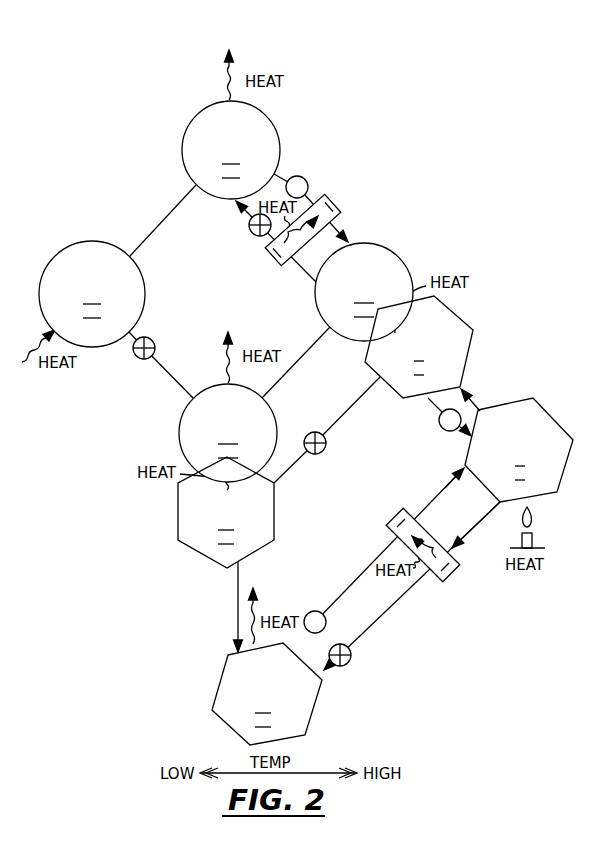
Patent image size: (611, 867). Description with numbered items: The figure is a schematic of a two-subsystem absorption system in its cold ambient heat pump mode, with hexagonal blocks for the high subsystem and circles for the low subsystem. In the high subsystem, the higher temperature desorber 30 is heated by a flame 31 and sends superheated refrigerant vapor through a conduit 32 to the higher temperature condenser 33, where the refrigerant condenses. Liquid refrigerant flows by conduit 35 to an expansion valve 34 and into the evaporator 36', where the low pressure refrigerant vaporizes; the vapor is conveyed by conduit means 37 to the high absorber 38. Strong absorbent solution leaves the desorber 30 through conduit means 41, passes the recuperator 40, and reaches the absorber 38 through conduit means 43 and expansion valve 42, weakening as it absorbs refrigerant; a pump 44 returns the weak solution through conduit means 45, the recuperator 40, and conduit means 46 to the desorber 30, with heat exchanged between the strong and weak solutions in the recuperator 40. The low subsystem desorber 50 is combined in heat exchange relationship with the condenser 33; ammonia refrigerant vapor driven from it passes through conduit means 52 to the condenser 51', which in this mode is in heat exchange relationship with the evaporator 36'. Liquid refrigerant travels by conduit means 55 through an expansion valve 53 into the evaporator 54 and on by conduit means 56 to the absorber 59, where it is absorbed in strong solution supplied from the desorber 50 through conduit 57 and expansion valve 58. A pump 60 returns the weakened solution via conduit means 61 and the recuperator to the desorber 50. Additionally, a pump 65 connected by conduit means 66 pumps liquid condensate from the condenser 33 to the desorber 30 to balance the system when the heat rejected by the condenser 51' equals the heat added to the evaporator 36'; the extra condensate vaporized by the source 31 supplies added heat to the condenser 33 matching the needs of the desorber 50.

The higher temperature desorber 30 is at (549, 415).
The flame 31 is at (532, 519).
The conduit 32 is at (473, 399).
The higher temperature condenser 33 is at (467, 324).
The expansion valve 34 is at (326, 449).
The conduit 35 is at (346, 412).
The evaporator 36' is at (200, 512).
The conduit means 37 is at (236, 606).
The high absorber 38 is at (313, 713).
The recuperator 40 is at (443, 582).
The conduit means 41 is at (481, 519).
The expansion valve 42 is at (350, 664).
The conduit means 43 is at (382, 616).
The pump 44 is at (306, 612).
The conduit means 45 is at (351, 582).
The conduit means 46 is at (443, 489).
The desorber 50 is at (407, 266).
The condenser 51' is at (202, 433).
The conduit means 52 is at (304, 352).
The expansion valve 53 is at (153, 341).
The evaporator 54 is at (145, 289).
The conduit means 55 is at (168, 373).
The conduit means 56 is at (163, 220).
The conduit 57 is at (306, 272).
The expansion valve 58 is at (249, 226).
The absorber 59 is at (276, 121).
The pump 60 is at (304, 179).
The conduit means 61 is at (318, 207).
The pump 65 is at (440, 421).
The conduit means 66 is at (457, 434).